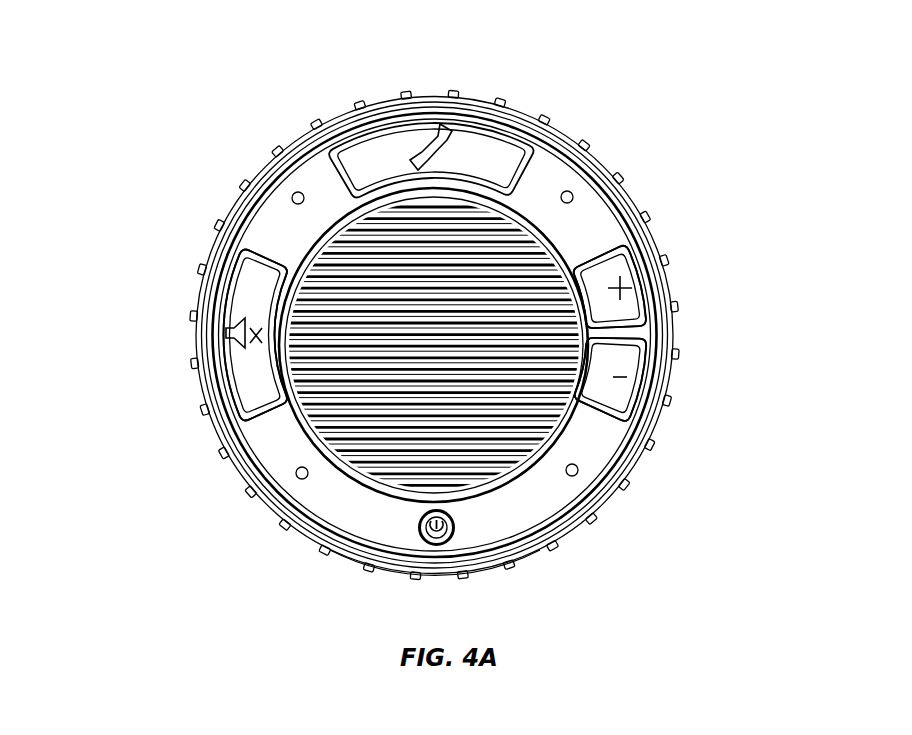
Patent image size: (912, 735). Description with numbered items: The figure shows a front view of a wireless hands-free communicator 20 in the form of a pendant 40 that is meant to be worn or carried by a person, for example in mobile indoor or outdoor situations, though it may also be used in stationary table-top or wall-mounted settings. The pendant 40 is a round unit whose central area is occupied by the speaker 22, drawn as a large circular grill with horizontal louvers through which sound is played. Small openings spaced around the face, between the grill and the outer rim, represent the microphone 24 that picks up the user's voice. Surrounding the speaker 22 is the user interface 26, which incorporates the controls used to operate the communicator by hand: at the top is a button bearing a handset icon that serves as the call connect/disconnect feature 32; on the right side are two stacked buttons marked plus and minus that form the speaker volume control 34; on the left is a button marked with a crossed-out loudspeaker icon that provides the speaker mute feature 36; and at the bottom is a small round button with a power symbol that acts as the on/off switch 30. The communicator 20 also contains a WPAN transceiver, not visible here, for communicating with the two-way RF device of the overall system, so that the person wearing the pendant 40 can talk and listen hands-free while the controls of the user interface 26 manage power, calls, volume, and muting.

The wireless hands-free communicator 20 is at (680, 104).
The speaker 22 is at (365, 480).
The microphone 24 is at (291, 196).
The user interface 26 is at (384, 107).
The on/off switch 30 is at (455, 530).
The call connect/disconnect feature 32 is at (434, 214).
The speaker volume control 34 is at (658, 352).
The speaker mute feature 36 is at (236, 364).
The pendant 40 is at (656, 183).